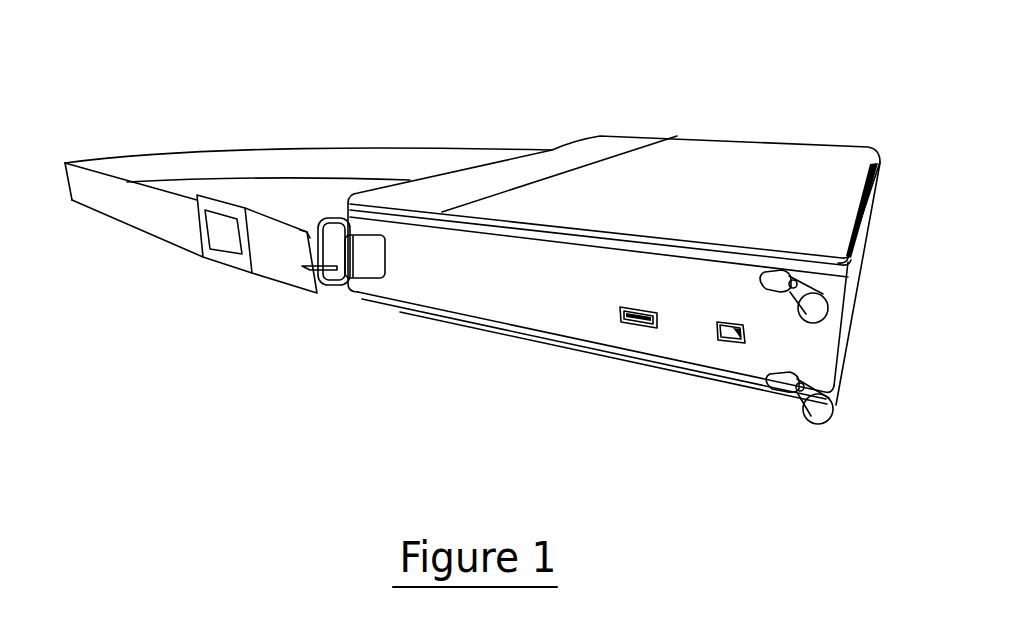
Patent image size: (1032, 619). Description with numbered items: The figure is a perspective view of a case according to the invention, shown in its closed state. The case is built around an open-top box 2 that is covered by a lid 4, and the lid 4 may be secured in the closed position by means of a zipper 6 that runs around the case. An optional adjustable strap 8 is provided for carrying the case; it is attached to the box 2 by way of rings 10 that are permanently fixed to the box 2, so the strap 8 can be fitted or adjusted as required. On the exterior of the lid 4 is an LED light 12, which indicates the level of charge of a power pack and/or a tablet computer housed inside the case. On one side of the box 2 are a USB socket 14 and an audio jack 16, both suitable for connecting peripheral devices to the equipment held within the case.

The open-top box 2 is at (490, 293).
The lid 4 is at (730, 163).
The zipper 6 is at (803, 250).
The adjustable strap 8 is at (163, 160).
The rings 10 is at (335, 284).
The LED light 12 is at (548, 132).
The USB socket 14 is at (610, 333).
The audio jack 16 is at (715, 368).